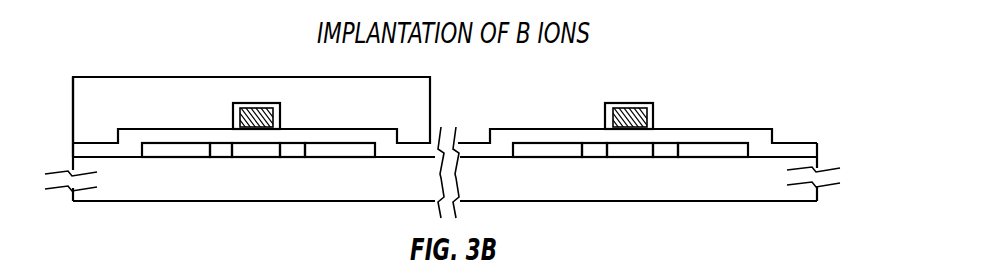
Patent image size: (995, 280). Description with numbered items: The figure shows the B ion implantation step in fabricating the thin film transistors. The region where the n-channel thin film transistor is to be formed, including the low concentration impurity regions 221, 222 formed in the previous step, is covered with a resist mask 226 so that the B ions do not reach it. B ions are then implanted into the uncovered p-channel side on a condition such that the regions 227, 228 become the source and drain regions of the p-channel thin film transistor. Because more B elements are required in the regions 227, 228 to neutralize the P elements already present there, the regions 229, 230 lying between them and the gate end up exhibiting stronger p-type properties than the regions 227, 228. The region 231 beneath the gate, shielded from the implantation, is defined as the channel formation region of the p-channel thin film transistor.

The low concentration impurity region 221 is at (223, 152).
The low concentration impurity region 222 is at (300, 152).
The resist mask 226 is at (198, 80).
The source/drain region 227 is at (538, 148).
The source/drain region 228 is at (717, 147).
The strong p-type region 229 is at (598, 150).
The strong p-type region 230 is at (665, 152).
The channel formation region 231 is at (640, 157).